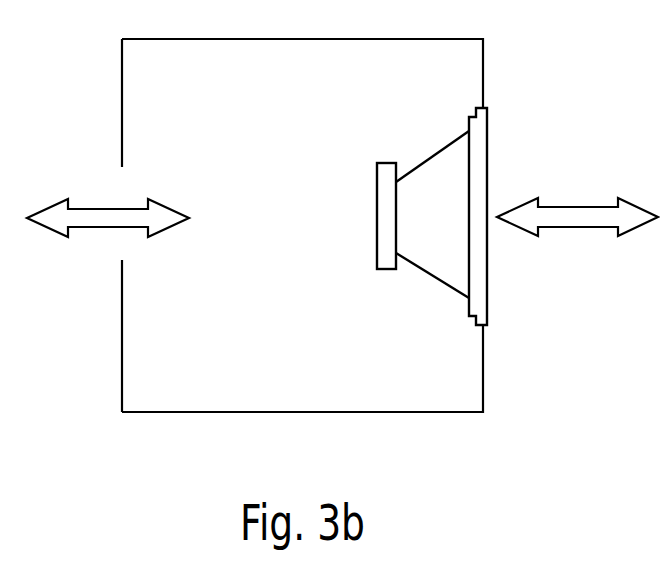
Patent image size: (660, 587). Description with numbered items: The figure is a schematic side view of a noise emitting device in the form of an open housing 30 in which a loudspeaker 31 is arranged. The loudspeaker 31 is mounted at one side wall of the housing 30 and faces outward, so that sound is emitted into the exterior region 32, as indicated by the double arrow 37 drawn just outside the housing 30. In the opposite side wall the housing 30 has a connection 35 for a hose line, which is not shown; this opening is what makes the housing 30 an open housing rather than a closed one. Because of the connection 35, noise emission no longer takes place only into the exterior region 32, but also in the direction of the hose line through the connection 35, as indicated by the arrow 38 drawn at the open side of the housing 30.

The open housing 30 is at (480, 383).
The loudspeaker 31 is at (451, 162).
The exterior region 32 is at (593, 144).
The connection for a hose line 35 is at (122, 260).
The double arrow 37 is at (557, 217).
The arrow 38 is at (103, 218).